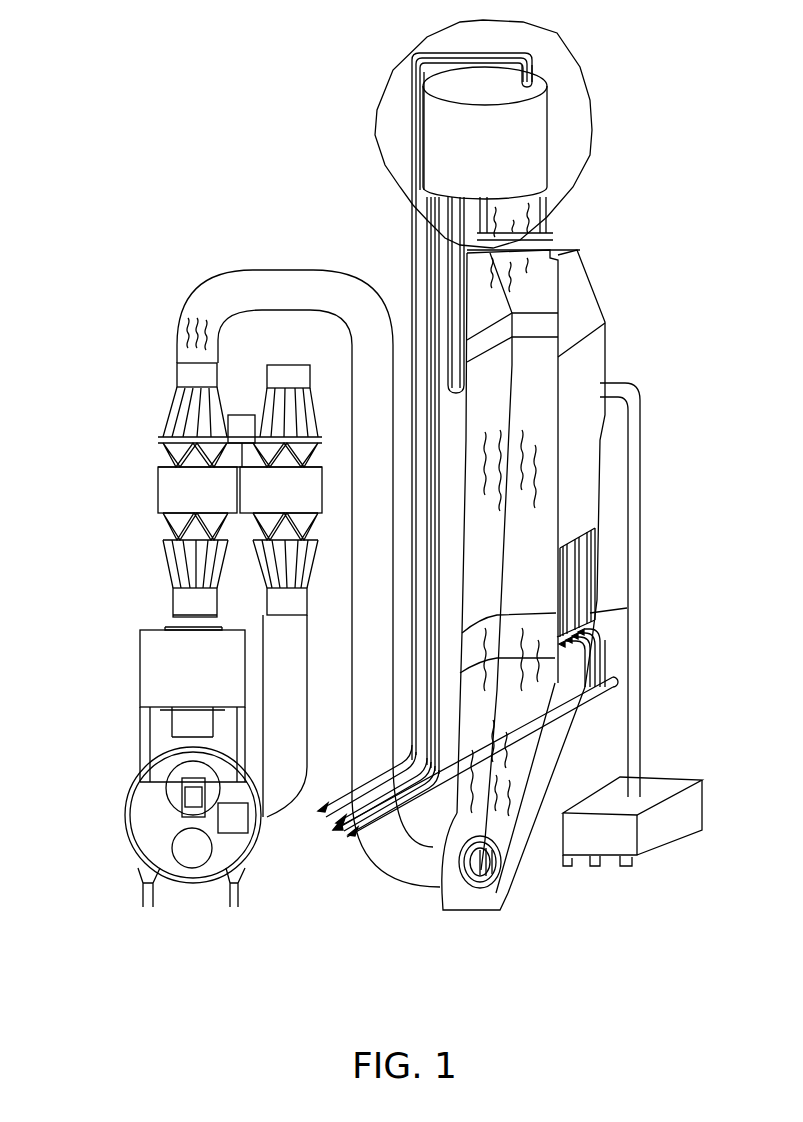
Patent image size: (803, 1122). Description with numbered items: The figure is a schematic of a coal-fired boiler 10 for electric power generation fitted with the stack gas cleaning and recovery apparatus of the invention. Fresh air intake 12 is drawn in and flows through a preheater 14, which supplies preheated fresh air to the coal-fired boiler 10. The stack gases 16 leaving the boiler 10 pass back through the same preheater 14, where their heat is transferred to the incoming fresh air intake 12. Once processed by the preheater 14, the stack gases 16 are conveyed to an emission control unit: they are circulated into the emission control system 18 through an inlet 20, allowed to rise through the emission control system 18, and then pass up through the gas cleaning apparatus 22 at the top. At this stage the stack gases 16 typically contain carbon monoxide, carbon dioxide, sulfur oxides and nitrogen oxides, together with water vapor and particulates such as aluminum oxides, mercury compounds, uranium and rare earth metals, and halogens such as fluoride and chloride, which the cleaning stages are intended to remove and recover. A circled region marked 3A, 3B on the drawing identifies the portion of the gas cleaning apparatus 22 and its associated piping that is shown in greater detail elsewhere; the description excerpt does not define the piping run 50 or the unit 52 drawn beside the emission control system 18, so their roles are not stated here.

The detail view region (FIGS. 3A, 3B) 3A is at (573, 132).
The detail view region (FIGS. 3A, 3B) 3B is at (583, 72).
The coal fired boiler 10 is at (128, 792).
The fresh air intake 12 is at (290, 363).
The preheater 14 is at (155, 492).
The stack gases 16 is at (193, 322).
The emission control system 18 is at (593, 620).
The inlet 20 is at (443, 887).
The gas cleaning apparatus 22 is at (548, 127).
The piping loop 50 is at (413, 250).
The control box 52 is at (703, 793).